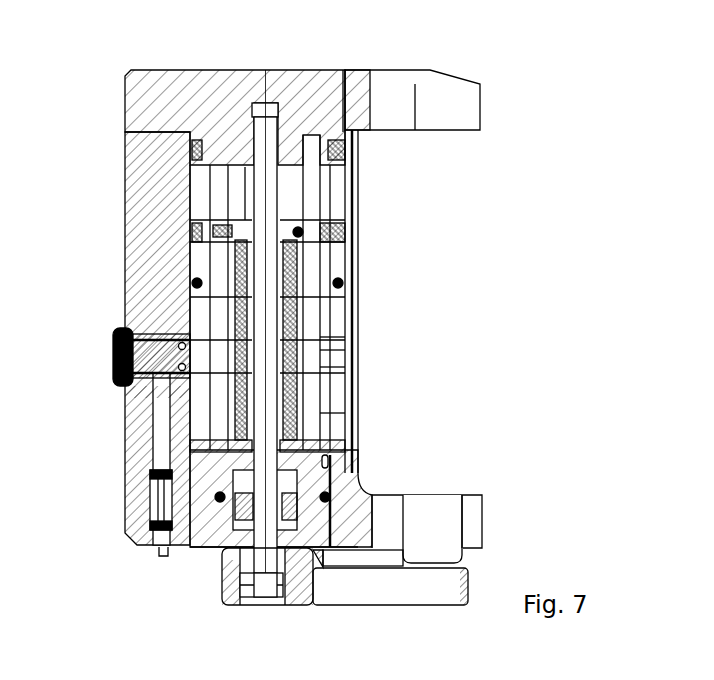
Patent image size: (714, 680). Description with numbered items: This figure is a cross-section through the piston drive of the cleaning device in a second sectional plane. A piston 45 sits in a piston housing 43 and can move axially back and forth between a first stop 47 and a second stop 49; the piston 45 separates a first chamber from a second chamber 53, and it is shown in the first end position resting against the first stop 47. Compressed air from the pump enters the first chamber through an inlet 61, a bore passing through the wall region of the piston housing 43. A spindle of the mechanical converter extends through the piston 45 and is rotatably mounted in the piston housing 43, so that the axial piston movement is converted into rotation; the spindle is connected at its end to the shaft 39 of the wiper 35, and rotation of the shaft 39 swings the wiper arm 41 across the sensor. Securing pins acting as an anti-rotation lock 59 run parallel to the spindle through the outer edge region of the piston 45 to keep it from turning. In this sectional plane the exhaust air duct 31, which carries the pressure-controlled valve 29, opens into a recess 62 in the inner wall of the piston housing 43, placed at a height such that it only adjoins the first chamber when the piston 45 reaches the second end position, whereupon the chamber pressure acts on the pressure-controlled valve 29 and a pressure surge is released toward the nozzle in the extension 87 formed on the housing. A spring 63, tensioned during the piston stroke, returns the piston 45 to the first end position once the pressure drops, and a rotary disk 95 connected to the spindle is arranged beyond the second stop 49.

The pressure-controlled valve 29 is at (124, 352).
The exhaust air duct 31 is at (128, 400).
The wiper 35 is at (272, 601).
The shaft 39 is at (222, 558).
The wiper arm 41 is at (403, 580).
The piston housing 43 is at (150, 226).
The piston 45 is at (358, 245).
The first stop 47 is at (237, 165).
The second stop 49 is at (322, 442).
The second chamber 53 is at (325, 318).
The anti-rotation lock 59 is at (303, 466).
The inlet 61 is at (190, 188).
The recess 62 is at (305, 400).
The spring 63 is at (160, 437).
The extension 87 is at (428, 505).
The rotary disk 95 is at (158, 487).